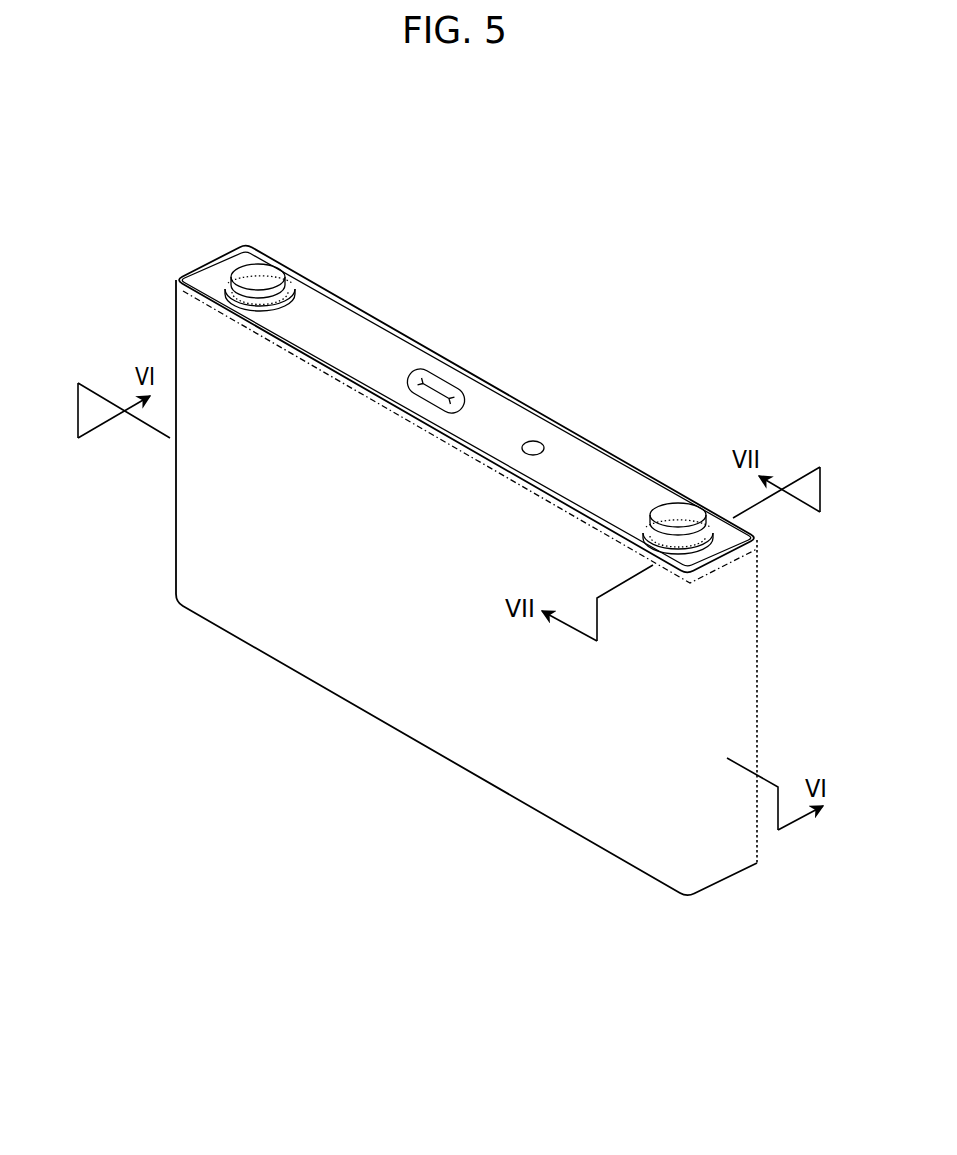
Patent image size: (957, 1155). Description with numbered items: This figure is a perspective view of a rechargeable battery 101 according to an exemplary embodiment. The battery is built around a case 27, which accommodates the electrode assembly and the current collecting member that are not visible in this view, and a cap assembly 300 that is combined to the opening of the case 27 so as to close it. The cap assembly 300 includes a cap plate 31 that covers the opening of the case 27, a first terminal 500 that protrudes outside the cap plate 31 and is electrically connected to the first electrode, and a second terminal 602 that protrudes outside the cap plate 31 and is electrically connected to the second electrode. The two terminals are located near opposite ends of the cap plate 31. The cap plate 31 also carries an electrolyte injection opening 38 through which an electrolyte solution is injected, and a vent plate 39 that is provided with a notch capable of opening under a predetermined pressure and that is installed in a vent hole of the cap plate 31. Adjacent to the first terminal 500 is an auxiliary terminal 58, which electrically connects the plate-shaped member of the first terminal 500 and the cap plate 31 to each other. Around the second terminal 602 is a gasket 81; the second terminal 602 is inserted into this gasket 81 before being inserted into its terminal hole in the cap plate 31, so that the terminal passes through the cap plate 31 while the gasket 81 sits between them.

The rechargeable battery 101 is at (466, 521).
The case 27 is at (370, 687).
The cap plate 31 is at (363, 340).
The electrolyte injection opening 38 is at (535, 442).
The vent plate 39 is at (430, 383).
The cap assembly 300 is at (502, 366).
The second terminal 602 is at (257, 270).
The gasket 81 is at (296, 299).
The first terminal 500 is at (673, 511).
The auxiliary terminal 58 is at (633, 518).